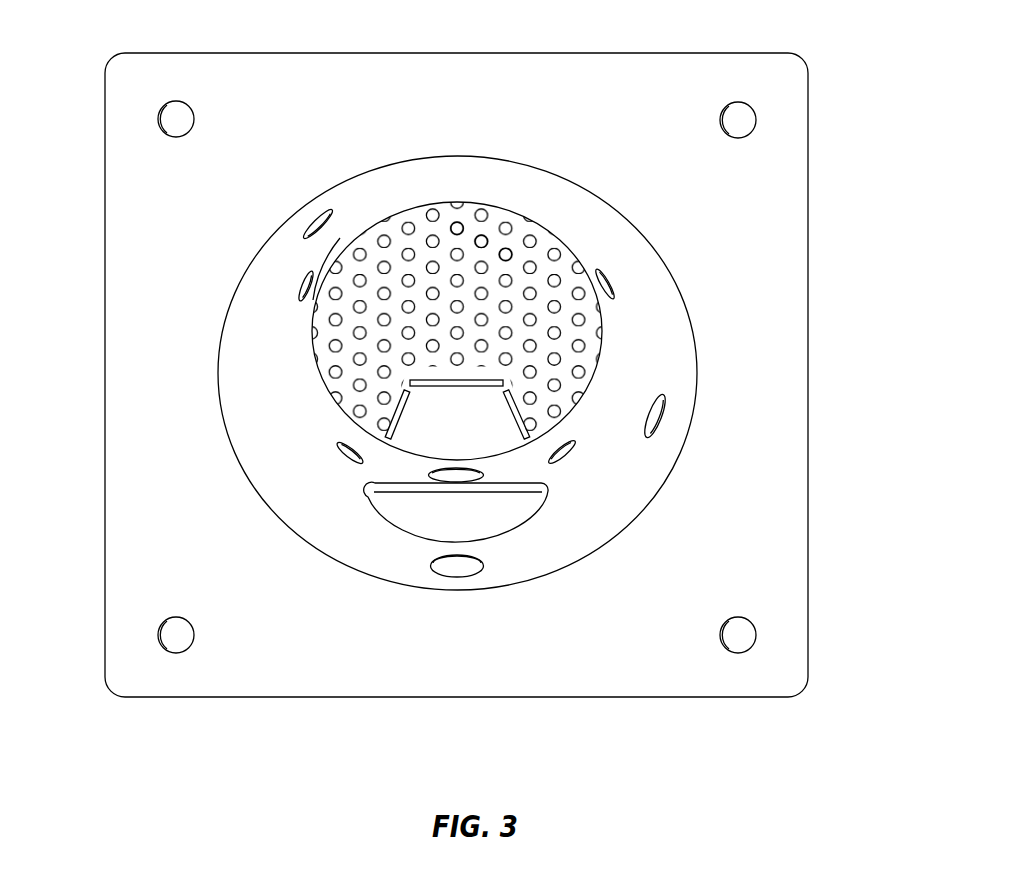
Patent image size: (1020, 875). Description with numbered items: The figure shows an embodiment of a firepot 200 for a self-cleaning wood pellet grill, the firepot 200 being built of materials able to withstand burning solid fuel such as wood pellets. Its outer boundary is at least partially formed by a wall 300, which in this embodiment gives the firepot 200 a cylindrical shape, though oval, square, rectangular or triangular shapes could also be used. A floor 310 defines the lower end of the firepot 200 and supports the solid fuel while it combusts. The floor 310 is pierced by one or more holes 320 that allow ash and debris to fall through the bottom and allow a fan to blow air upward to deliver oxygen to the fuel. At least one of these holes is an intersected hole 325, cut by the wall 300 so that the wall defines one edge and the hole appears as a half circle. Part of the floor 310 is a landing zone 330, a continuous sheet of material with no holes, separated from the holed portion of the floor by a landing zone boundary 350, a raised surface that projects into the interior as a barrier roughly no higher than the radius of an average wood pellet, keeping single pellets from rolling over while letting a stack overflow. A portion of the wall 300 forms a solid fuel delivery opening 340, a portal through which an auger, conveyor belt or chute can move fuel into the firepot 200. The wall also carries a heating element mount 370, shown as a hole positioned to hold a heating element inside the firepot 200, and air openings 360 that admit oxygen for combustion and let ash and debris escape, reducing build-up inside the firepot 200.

The firepot 200 is at (710, 732).
The wall 300 is at (678, 356).
The floor 310 is at (435, 220).
The holes 320 is at (508, 248).
The intersected hole 325 is at (330, 262).
The landing zone 330 is at (423, 447).
The solid fuel delivery opening 340 is at (422, 507).
The landing zone boundary 350 is at (398, 411).
The air openings 360 is at (328, 207).
The heating element mount 370 is at (478, 468).